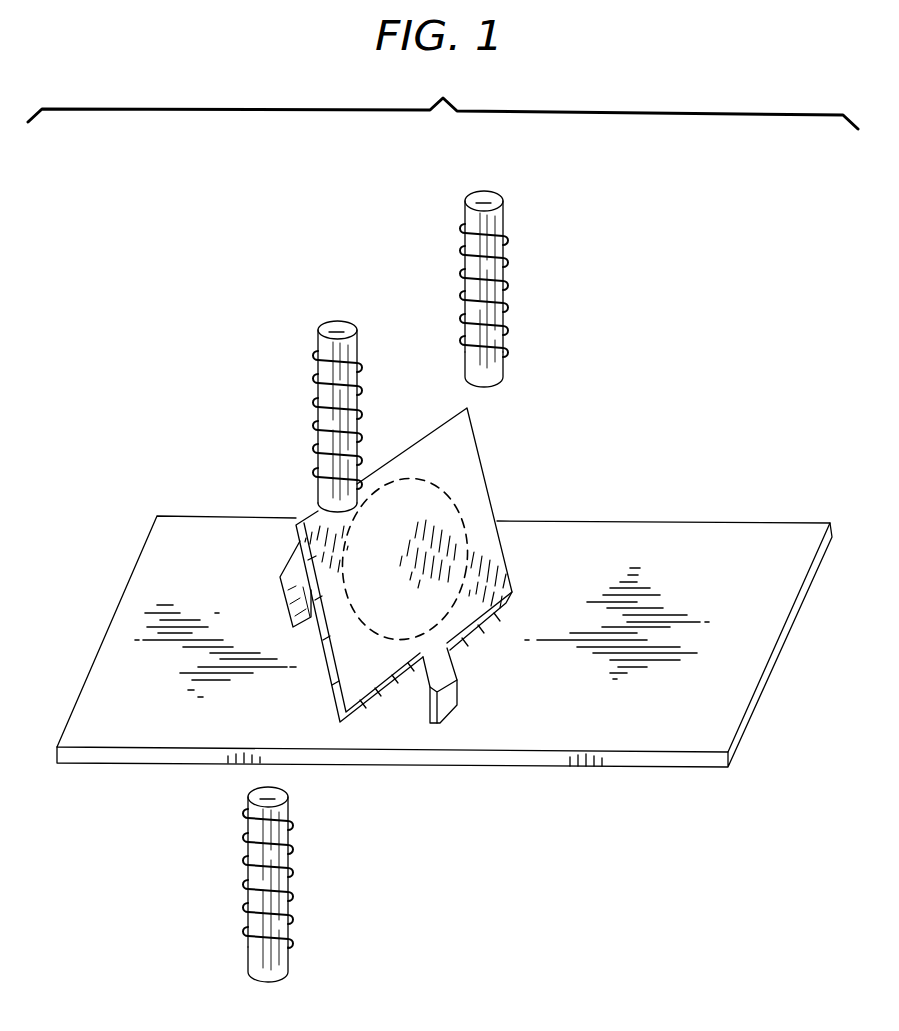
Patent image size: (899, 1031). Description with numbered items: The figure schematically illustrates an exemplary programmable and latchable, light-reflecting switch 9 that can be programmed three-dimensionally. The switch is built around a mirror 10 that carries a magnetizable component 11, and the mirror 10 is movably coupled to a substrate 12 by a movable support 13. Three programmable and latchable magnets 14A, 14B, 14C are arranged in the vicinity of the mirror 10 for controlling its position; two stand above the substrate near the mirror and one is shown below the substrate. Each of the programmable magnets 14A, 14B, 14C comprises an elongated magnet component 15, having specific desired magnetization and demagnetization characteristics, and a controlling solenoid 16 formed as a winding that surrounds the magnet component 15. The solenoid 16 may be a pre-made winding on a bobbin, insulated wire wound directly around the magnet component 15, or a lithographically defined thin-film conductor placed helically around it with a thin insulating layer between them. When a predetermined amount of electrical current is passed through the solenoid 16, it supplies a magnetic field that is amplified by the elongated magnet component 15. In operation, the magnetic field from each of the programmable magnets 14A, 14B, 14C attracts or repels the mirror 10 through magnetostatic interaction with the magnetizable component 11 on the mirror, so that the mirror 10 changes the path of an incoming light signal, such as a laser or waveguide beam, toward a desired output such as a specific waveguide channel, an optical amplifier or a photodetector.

The light-reflecting switch 9 is at (372, 203).
The mirror 10 is at (440, 518).
The magnetizable component 11 is at (292, 585).
The substrate 12 is at (764, 683).
The movable support 13 is at (459, 690).
The programmable and latchable magnet 14A is at (359, 346).
The programmable and latchable magnet 14B is at (505, 214).
The programmable and latchable magnet 14C is at (291, 811).
The magnet component 15 is at (476, 362).
The controlling solenoid 16 is at (506, 240).